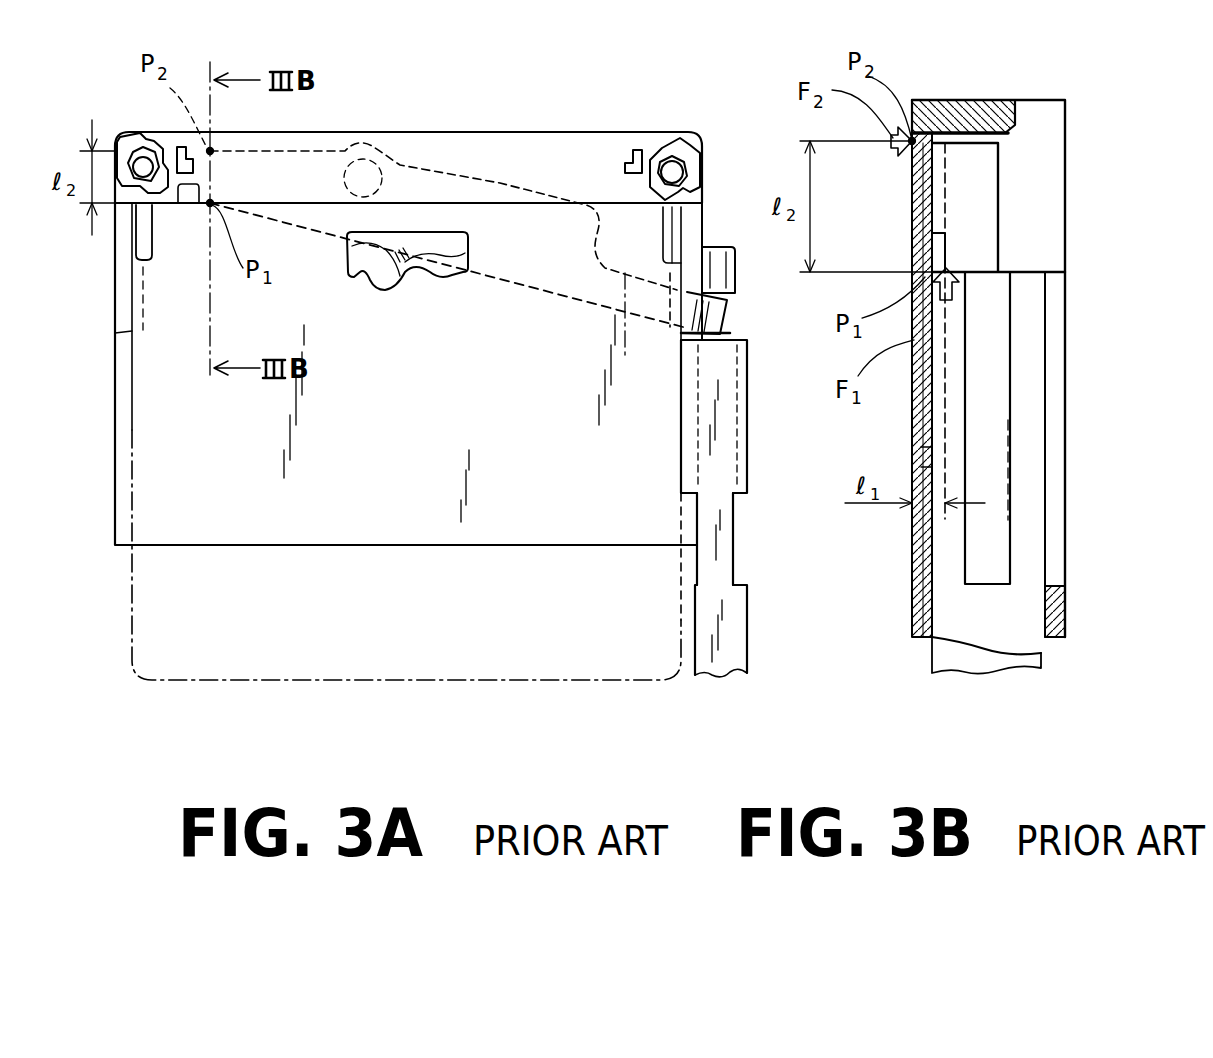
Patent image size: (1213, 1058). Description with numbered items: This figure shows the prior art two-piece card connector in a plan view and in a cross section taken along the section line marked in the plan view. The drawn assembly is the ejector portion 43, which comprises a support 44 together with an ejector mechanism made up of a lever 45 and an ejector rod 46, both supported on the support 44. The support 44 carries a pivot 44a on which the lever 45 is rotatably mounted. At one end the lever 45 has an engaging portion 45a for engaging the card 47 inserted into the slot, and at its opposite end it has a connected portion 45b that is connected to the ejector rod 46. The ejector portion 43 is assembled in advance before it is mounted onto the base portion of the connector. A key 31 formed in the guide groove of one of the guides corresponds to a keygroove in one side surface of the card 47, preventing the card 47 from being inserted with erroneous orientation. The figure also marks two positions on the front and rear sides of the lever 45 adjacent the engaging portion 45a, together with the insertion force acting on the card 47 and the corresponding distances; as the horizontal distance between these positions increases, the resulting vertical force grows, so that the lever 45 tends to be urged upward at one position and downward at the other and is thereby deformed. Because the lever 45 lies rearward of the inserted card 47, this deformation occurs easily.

In FIG. 3B, the key 31 is at (985, 386).
In FIG. 3A, the ejector portion 43 is at (615, 247).
In FIG. 3B, the ejector portion 43 is at (905, 457).
In FIG. 3A, the support 44 is at (160, 452).
In FIG. 3B, the support 44 is at (914, 560).
In FIG. 3A, the pivot 44a is at (400, 165).
In FIG. 3A, the lever 45 is at (505, 183).
In FIG. 3B, the lever 45 is at (933, 207).
In FIG. 3A, the engaging portion 45a is at (188, 205).
In FIG. 3A, the connected portion 45b is at (713, 318).
In FIG. 3A, the ejector rod 46 is at (716, 547).
In FIG. 3A, the card 47 is at (640, 682).
In FIG. 3B, the card 47 is at (1015, 668).